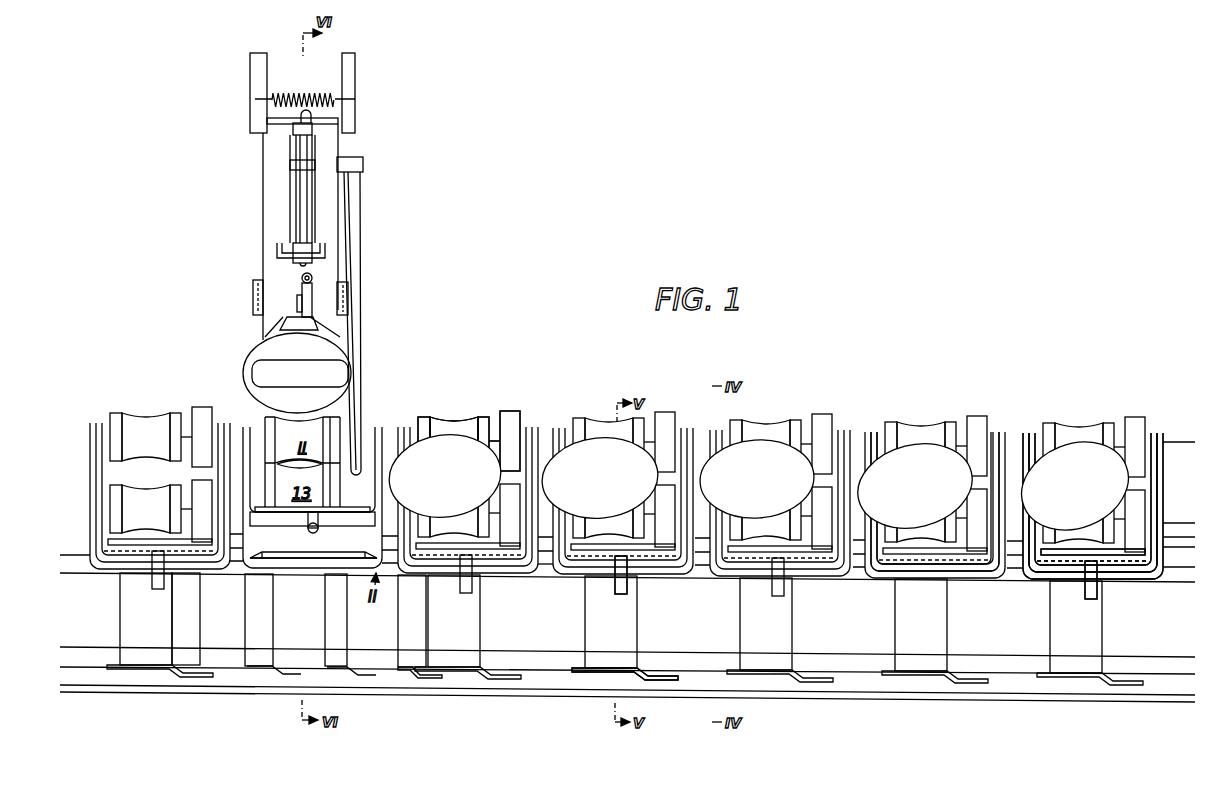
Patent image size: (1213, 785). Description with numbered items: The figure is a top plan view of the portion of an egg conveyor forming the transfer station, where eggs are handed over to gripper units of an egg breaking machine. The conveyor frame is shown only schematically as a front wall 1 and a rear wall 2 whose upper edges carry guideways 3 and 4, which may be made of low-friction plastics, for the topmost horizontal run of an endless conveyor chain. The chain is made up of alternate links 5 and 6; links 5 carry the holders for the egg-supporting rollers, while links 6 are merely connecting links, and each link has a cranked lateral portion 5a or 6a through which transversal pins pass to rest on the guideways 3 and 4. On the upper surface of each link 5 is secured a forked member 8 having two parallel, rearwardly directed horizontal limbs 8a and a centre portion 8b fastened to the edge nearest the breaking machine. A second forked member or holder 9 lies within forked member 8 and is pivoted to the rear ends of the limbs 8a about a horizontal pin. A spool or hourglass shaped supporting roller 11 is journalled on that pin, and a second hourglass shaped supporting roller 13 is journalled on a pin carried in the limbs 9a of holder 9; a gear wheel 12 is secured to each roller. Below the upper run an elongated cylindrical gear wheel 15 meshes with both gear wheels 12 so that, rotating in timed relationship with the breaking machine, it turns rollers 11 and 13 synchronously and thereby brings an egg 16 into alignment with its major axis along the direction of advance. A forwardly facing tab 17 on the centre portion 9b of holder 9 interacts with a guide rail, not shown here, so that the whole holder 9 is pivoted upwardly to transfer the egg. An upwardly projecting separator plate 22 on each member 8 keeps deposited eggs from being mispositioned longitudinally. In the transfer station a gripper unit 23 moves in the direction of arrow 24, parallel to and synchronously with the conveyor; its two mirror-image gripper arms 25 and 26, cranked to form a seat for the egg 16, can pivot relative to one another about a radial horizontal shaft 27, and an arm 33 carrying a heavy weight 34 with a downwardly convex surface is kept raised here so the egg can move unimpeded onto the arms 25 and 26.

The front wall 1 is at (185, 695).
The rear wall 2 is at (238, 537).
The guideway 3 is at (68, 667).
The guideway 4 is at (78, 573).
The chain link 5 is at (285, 614).
The cranked lateral portion 5a is at (528, 675).
The chain link 6 is at (240, 630).
The cranked lateral portion 6a is at (405, 668).
The forked member 8 is at (306, 575).
The limbs 8a is at (523, 575).
The centre portion 8b is at (558, 576).
The holder 9 is at (290, 535).
The limbs 9a is at (721, 574).
The centre portion 9b is at (746, 574).
The supporting roller 11 is at (452, 423).
The gear wheel 12 is at (975, 420).
The supporting roller 13 is at (455, 522).
The gear wheel 15 is at (855, 440).
The egg 16 is at (340, 350).
The tab 17 is at (318, 530).
The separator plate 22 is at (1014, 455).
The gripper unit 23 is at (332, 258).
The arrow 24 is at (372, 118).
The gripper arm 25 is at (265, 186).
The gripper arm 26 is at (333, 190).
The shaft 27 is at (307, 148).
The arm 33 is at (352, 290).
The weight 34 is at (300, 373).